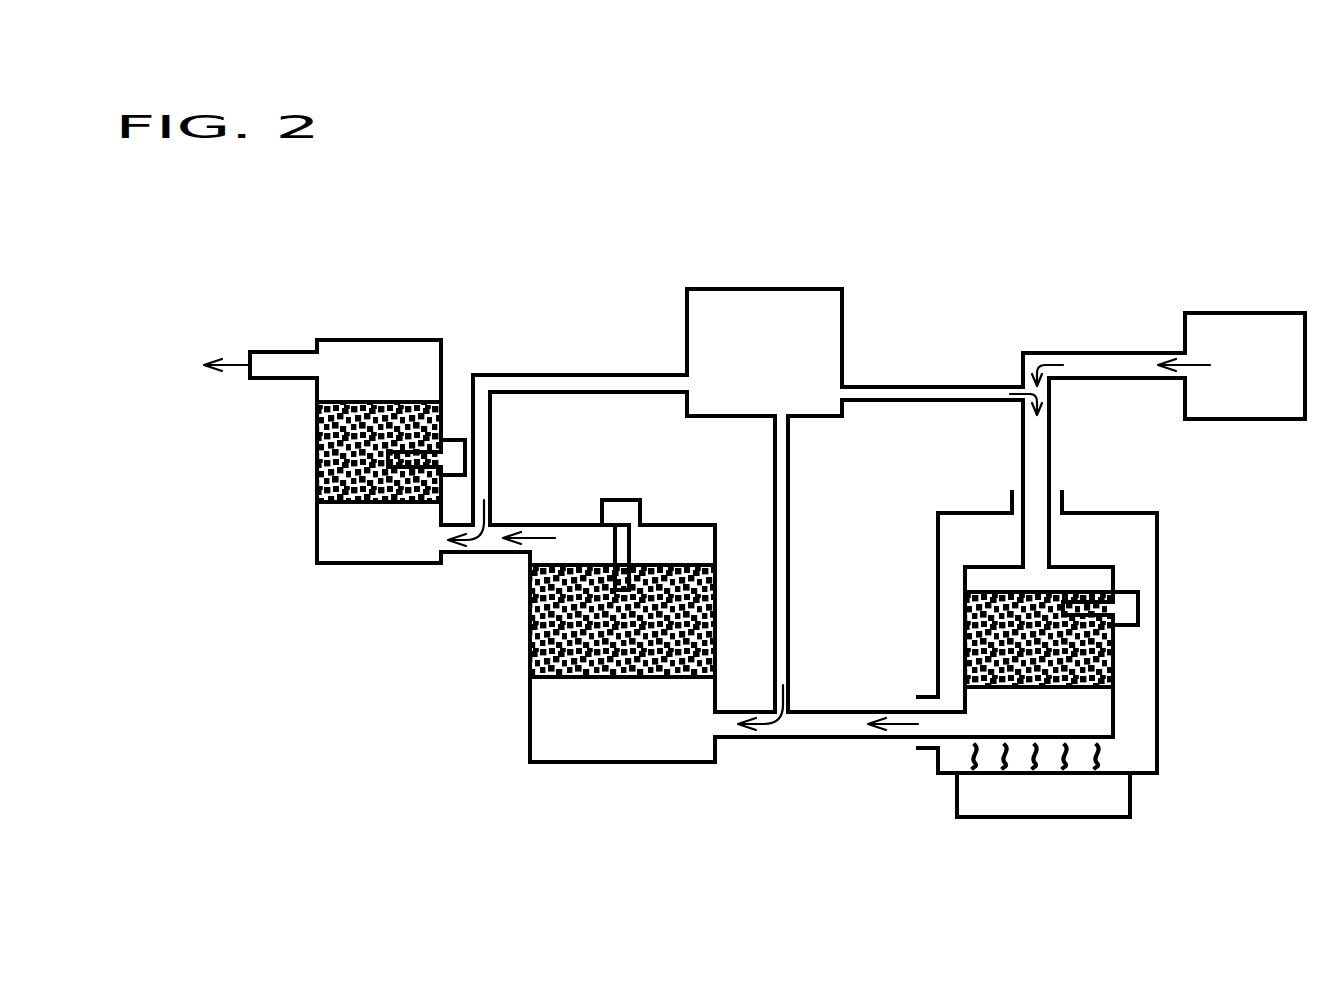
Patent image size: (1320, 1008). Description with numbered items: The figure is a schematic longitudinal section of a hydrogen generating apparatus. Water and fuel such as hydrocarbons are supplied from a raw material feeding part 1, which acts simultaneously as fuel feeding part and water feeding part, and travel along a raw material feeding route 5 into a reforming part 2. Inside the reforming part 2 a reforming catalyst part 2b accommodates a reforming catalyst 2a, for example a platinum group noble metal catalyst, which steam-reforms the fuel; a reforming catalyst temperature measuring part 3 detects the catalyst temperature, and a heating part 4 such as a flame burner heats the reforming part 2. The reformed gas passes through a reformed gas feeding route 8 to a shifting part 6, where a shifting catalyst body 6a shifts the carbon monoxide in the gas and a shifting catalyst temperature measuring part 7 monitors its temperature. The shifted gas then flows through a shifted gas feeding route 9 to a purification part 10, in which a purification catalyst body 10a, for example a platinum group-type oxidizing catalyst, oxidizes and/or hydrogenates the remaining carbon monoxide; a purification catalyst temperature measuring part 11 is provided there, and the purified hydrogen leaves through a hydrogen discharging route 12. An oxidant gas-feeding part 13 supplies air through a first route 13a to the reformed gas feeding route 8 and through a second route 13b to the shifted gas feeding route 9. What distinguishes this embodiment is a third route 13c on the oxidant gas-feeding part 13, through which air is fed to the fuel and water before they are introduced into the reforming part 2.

The raw material feeding part 1 is at (1242, 313).
The reforming part 2 is at (1157, 612).
The reforming catalyst 2a is at (1042, 618).
The reforming catalyst part 2b is at (1113, 660).
The reforming catalyst temperature measuring part 3 is at (1114, 598).
The heating part 4 is at (1045, 817).
The raw material feeding route 5 is at (1052, 352).
The shifting part 6 is at (527, 712).
The shifting catalyst body 6a is at (527, 622).
The shifting catalyst temperature measuring part 7 is at (622, 500).
The reformed gas feeding route 8 is at (765, 740).
The shifted gas feeding route 9 is at (467, 553).
The purification part 10 is at (382, 340).
The purification catalyst body 10a is at (328, 490).
The purification catalyst temperature measuring part 11 is at (452, 440).
The hydrogen discharging route 12 is at (278, 351).
The oxidant gas-feeding part 13 is at (745, 287).
The first route 13a is at (788, 525).
The second route 13b is at (565, 375).
The third route 13c is at (912, 387).